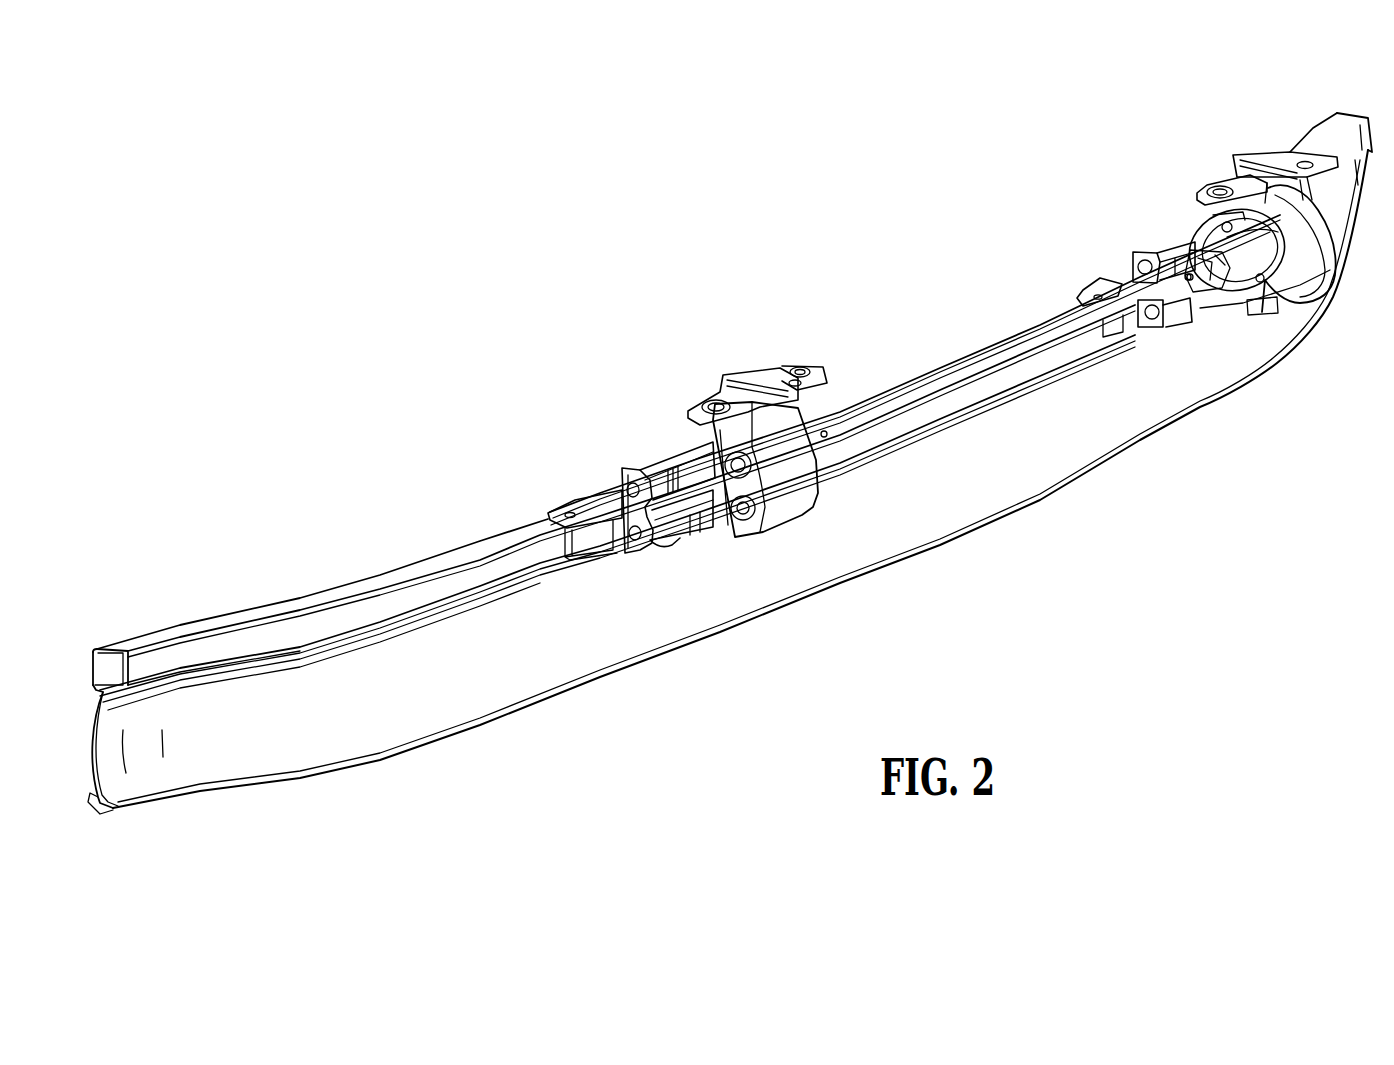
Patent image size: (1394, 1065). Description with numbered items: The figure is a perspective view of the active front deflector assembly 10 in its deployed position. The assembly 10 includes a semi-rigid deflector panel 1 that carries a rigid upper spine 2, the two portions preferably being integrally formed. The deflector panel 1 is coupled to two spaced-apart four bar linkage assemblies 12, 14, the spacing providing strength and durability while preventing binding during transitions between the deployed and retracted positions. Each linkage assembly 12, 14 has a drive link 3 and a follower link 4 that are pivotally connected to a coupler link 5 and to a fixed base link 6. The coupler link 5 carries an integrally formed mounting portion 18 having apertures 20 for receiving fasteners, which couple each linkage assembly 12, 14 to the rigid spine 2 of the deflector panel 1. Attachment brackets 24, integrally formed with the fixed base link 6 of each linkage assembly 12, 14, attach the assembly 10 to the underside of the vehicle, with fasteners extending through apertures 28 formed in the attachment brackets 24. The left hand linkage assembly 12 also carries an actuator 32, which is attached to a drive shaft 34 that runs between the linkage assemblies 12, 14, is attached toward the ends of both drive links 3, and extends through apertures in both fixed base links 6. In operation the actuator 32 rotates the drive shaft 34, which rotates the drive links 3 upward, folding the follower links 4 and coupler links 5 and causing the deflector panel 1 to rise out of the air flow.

The deflector panel 1 is at (633, 637).
The upper spine 2 is at (428, 566).
The drive link 3 is at (688, 466).
The follower link 4 is at (710, 527).
The coupler link 5 is at (598, 502).
The fixed base link 6 is at (737, 437).
The active front deflector assembly 10 is at (436, 308).
The linkage assembly 12 is at (1131, 249).
The linkage assembly 14 is at (646, 456).
The mounting portion 18 is at (546, 515).
The apertures 20 is at (568, 512).
The attachment brackets 24 is at (746, 373).
The aperture 28 is at (716, 404).
The actuator 32 is at (1257, 262).
The drive shaft 34 is at (1023, 347).